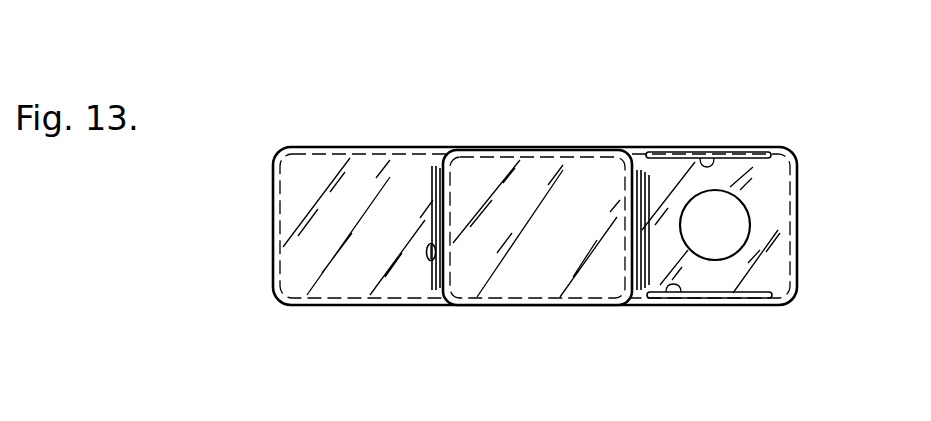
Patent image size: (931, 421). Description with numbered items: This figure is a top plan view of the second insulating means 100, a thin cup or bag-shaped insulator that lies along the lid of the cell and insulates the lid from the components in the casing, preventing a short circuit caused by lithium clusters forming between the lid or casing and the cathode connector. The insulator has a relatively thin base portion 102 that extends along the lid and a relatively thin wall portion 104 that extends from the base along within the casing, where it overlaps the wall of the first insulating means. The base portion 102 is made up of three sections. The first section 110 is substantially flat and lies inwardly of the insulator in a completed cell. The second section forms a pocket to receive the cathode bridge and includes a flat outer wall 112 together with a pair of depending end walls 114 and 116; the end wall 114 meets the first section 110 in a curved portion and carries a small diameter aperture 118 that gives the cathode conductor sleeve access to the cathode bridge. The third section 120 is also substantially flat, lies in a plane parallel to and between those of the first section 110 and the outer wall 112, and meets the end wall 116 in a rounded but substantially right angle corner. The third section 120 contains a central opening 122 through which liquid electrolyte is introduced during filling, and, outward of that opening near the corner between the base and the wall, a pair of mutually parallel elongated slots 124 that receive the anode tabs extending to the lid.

The second insulating means 100 is at (374, 106).
The base portion 102 is at (351, 282).
The wall portion 104 is at (260, 228).
The first section 110 is at (324, 163).
The outer wall 112 is at (540, 170).
The end wall 114 is at (442, 192).
The end wall 116 is at (656, 192).
The aperture 118 is at (427, 252).
The third section 120 is at (738, 152).
The central opening 122 is at (716, 258).
The elongated slots 124 is at (707, 156).